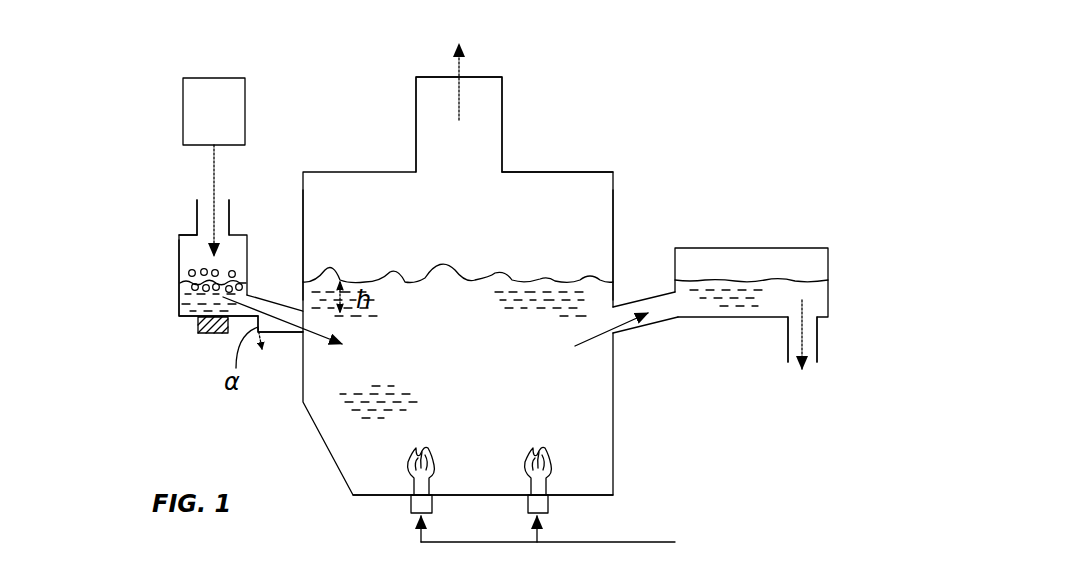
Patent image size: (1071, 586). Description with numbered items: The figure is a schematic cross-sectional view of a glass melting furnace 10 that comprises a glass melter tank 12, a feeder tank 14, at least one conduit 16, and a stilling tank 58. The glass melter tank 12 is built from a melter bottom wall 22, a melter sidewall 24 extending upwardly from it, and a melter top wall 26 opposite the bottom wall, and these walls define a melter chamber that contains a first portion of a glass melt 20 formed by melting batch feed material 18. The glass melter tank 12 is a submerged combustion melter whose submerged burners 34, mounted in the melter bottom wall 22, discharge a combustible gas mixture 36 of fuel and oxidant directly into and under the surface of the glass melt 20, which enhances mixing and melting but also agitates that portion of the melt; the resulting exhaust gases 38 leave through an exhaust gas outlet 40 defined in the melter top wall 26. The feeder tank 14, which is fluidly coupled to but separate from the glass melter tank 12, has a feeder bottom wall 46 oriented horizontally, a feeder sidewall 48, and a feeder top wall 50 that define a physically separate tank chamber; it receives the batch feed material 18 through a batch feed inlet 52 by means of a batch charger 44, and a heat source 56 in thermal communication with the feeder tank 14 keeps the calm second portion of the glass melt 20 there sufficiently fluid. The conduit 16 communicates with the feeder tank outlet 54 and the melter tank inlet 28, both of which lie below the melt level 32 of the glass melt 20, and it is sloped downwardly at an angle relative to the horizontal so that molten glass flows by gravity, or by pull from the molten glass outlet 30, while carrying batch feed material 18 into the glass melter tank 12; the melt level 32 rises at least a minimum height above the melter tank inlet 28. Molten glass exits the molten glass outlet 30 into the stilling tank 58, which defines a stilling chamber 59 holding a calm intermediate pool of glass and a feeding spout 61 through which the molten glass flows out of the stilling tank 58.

The glass melting furnace 10 is at (657, 67).
The glass melter tank 12 is at (568, 138).
The feeder tank 14 is at (143, 277).
The conduit 16 is at (265, 322).
The batch feed material 18 is at (190, 288).
The glass melt 20 is at (153, 333).
The melter bottom wall 22 is at (362, 498).
The melter sidewall 24 is at (303, 186).
The melter top wall 26 is at (520, 171).
The melter tank inlet 28 is at (293, 340).
The molten glass outlet 30 is at (652, 323).
The melt level 32 is at (237, 287).
The submerged burners 34 is at (528, 507).
The combustible gas mixture 36 is at (564, 538).
The exhaust gases 38 is at (461, 70).
The exhaust gas outlet 40 is at (416, 113).
The batch charger 44 is at (214, 167).
The feeder bottom wall 46 is at (189, 320).
The feeder sidewall 48 is at (179, 238).
The feeder top wall 50 is at (189, 232).
The batch feed inlet 52 is at (226, 192).
The feeder tank outlet 54 is at (255, 292).
The heat source 56 is at (200, 344).
The stilling tank 58 is at (828, 257).
The stilling chamber 59 is at (781, 261).
The feeding spout 61 is at (817, 336).